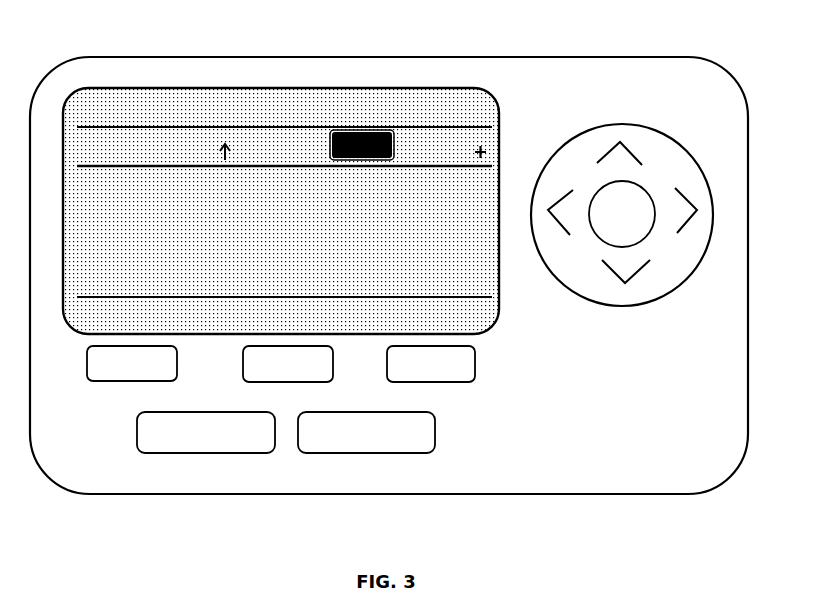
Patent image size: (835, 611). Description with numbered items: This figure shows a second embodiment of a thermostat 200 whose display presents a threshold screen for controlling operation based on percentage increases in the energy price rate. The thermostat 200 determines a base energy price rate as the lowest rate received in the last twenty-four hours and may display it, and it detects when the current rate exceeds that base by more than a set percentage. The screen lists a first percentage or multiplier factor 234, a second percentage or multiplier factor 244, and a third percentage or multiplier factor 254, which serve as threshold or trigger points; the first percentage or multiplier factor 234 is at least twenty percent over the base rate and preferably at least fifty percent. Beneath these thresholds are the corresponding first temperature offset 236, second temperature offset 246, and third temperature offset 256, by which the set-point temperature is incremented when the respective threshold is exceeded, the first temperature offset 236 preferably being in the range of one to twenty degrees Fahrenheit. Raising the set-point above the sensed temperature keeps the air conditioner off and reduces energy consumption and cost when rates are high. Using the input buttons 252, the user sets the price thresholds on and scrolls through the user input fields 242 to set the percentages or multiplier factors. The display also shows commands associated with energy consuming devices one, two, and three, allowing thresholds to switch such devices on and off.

The thermostat 200 is at (468, 495).
The first percentage or multiplier factor 234 is at (302, 132).
The second percentage or multiplier factor 244 is at (393, 133).
The user input fields 242 is at (392, 147).
The third percentage or multiplier factor 254 is at (483, 137).
The first temperature offset 236 is at (265, 202).
The second temperature offset 246 is at (347, 197).
The third temperature offset 256 is at (455, 195).
The input buttons 252 is at (632, 153).